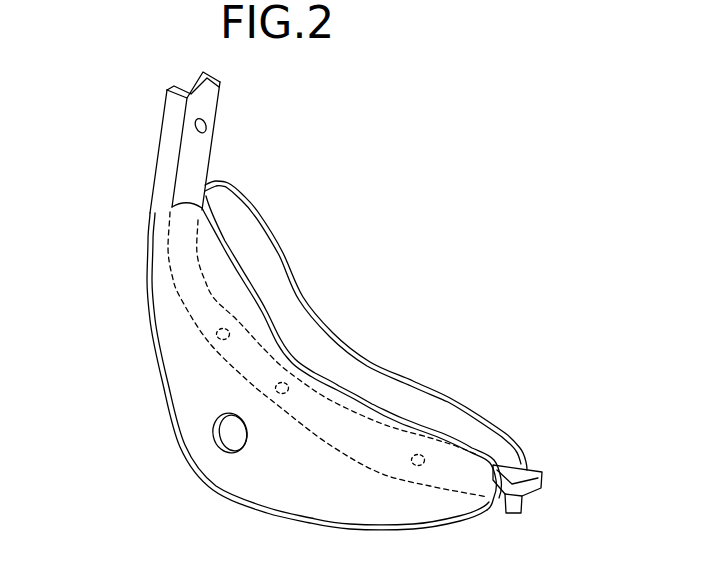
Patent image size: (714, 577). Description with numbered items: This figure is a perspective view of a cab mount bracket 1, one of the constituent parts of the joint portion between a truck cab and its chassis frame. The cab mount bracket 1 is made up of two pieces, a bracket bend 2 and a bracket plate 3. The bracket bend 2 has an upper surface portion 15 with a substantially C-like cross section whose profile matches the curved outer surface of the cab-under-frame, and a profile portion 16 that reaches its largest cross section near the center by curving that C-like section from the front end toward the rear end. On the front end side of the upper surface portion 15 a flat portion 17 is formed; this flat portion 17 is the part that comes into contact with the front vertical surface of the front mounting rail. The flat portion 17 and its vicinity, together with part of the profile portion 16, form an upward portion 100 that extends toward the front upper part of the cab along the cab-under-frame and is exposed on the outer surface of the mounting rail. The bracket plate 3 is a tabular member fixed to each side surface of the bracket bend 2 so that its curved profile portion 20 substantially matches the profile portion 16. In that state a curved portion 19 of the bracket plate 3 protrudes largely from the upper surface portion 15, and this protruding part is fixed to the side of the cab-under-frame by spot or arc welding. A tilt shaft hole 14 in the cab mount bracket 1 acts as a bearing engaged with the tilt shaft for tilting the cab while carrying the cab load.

The cab mount bracket 1 is at (400, 245).
The bracket bend 2 is at (220, 145).
The bracket plate 3 is at (472, 403).
The tilt shaft hole 14 is at (217, 440).
The upper surface portion 15 is at (189, 175).
The profile portion 16 is at (148, 200).
The flat portion 17 is at (203, 108).
The curved portion 19 is at (363, 353).
The curved profile portion 20 is at (253, 502).
The upward portion 100 is at (158, 143).